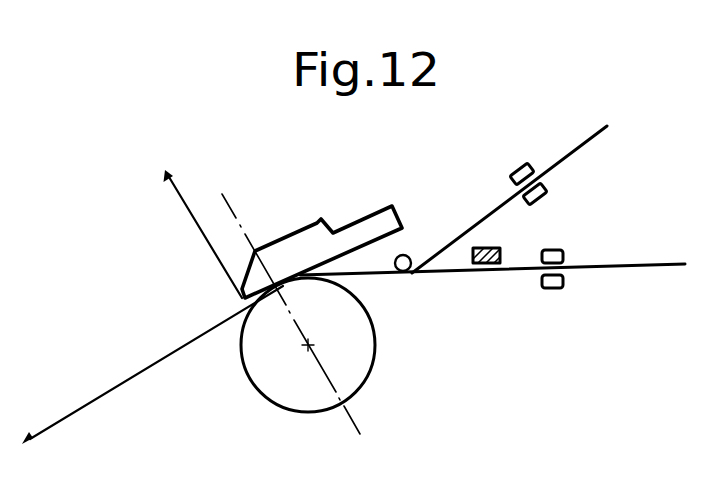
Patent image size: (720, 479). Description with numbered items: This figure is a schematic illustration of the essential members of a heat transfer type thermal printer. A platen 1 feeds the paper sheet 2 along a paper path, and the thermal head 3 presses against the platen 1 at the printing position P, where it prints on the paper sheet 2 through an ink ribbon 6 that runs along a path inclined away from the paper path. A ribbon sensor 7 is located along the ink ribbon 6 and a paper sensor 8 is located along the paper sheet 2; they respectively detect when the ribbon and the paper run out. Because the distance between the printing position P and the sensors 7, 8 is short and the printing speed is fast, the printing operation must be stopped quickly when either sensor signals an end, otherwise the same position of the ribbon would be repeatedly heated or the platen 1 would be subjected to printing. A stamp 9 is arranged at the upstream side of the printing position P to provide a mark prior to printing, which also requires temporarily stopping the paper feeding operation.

The platen 1 is at (377, 357).
The paper sheet 2 is at (642, 263).
The thermal head 3 is at (309, 226).
The ink ribbon 6 is at (587, 140).
The ribbon sensor 7 is at (515, 167).
The paper sensor 8 is at (553, 249).
The stamp 9 is at (493, 247).
The printing position P is at (293, 292).